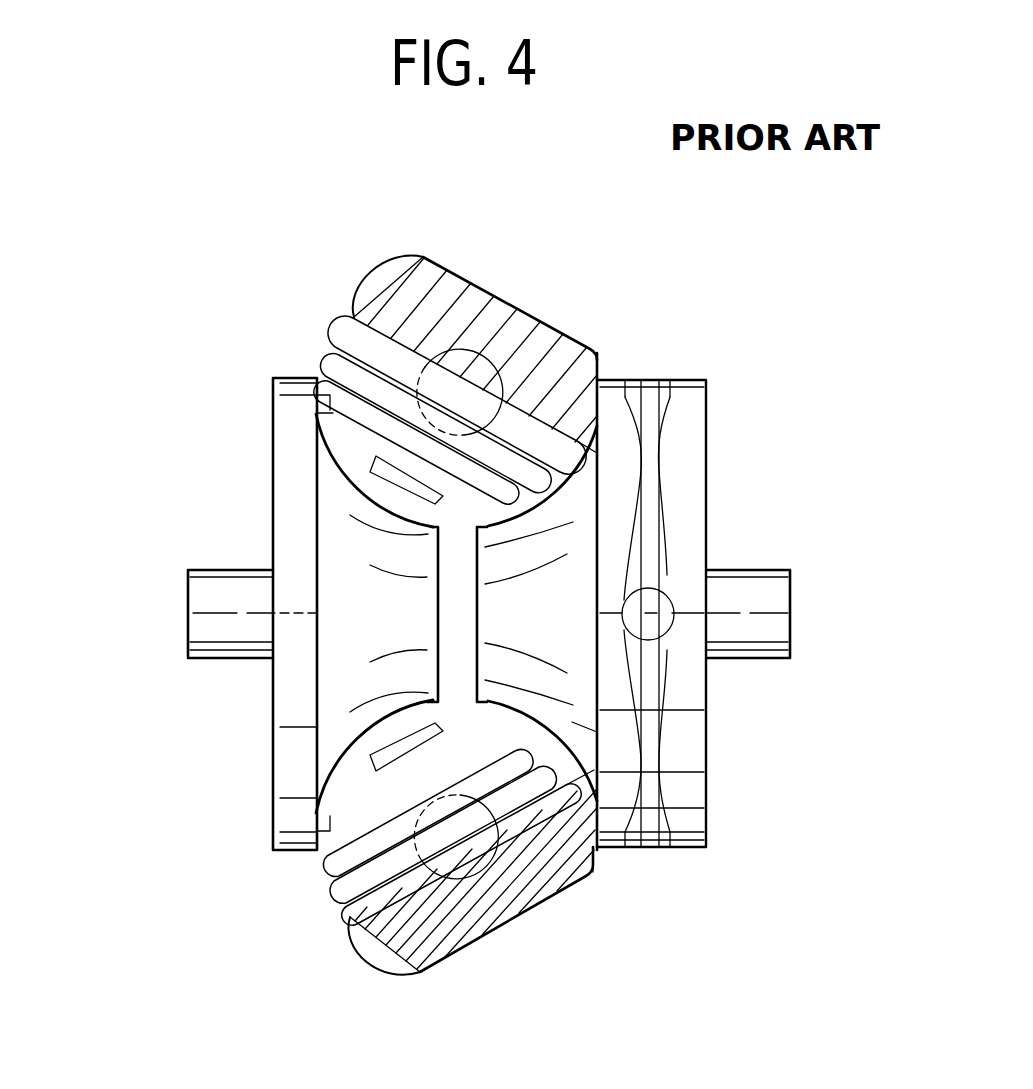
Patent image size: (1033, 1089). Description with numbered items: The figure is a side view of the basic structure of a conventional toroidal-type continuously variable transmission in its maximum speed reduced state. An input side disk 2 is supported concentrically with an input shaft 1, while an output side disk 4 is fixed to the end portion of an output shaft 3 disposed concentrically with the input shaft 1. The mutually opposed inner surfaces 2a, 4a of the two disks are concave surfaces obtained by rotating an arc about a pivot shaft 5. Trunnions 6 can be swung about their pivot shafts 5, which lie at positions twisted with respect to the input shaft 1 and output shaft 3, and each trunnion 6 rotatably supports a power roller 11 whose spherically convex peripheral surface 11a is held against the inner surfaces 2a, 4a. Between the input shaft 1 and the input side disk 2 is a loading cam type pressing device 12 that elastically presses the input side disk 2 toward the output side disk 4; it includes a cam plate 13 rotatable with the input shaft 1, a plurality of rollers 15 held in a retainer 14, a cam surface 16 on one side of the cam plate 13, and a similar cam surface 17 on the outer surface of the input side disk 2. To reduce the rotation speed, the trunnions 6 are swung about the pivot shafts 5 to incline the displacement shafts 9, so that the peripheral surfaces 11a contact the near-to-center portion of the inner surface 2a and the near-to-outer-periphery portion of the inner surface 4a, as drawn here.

The input shaft 1 is at (775, 595).
The input side disk 2 is at (625, 470).
The inner surface of input side disk 2a is at (540, 770).
The output shaft 3 is at (205, 598).
The output side disk 4 is at (283, 498).
The inner surface of output side disk 4a is at (372, 493).
The pivot shaft 5 is at (497, 380).
The trunnion 6 is at (437, 297).
The displacement shaft 9 is at (373, 458).
The power roller 11 is at (327, 397).
The peripheral surface of power roller 11a is at (333, 413).
The pressing device 12 is at (718, 352).
The cam plate 13 is at (690, 430).
The retainer 14 is at (652, 377).
The roller 15 is at (638, 377).
The cam surface of cam plate 16 is at (667, 530).
The cam surface of input side disk 17 is at (627, 677).